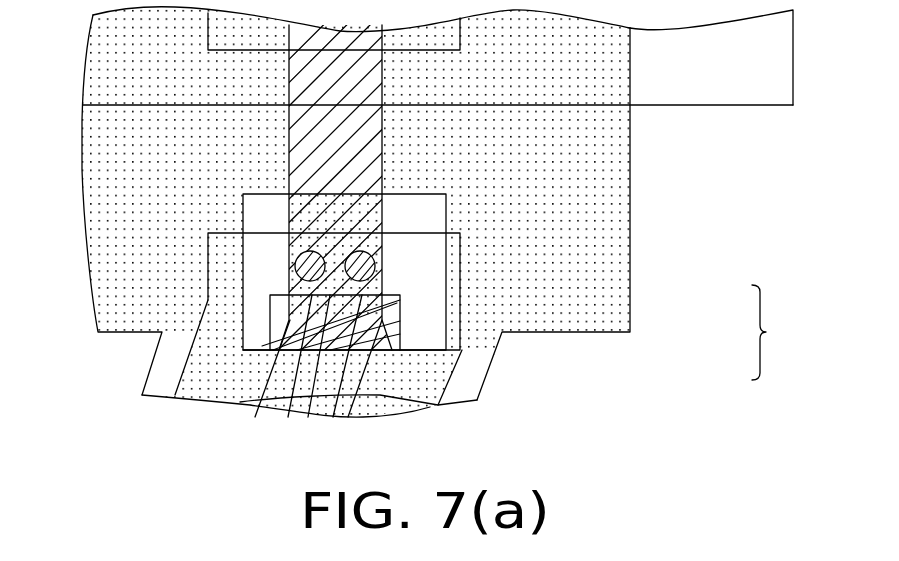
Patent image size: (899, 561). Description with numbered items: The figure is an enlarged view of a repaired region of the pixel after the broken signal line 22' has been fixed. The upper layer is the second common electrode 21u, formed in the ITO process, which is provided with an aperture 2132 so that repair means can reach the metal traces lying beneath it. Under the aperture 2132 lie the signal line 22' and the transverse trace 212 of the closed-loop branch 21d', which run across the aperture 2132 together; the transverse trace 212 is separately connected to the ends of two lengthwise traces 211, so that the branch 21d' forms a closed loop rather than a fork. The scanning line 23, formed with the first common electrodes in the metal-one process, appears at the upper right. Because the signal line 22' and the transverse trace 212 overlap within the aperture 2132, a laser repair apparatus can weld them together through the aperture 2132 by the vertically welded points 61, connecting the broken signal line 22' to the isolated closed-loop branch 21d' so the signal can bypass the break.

The second common electrode 21u is at (610, 182).
The scanning line 23 is at (668, 90).
The aperture 2132 is at (413, 213).
The transverse trace 212 is at (418, 270).
The lengthwise trace 211 is at (428, 367).
The closed-loop branch 21d' is at (791, 332).
The broken signal line 22' is at (443, 371).
The vertically welded point 61 is at (350, 278).